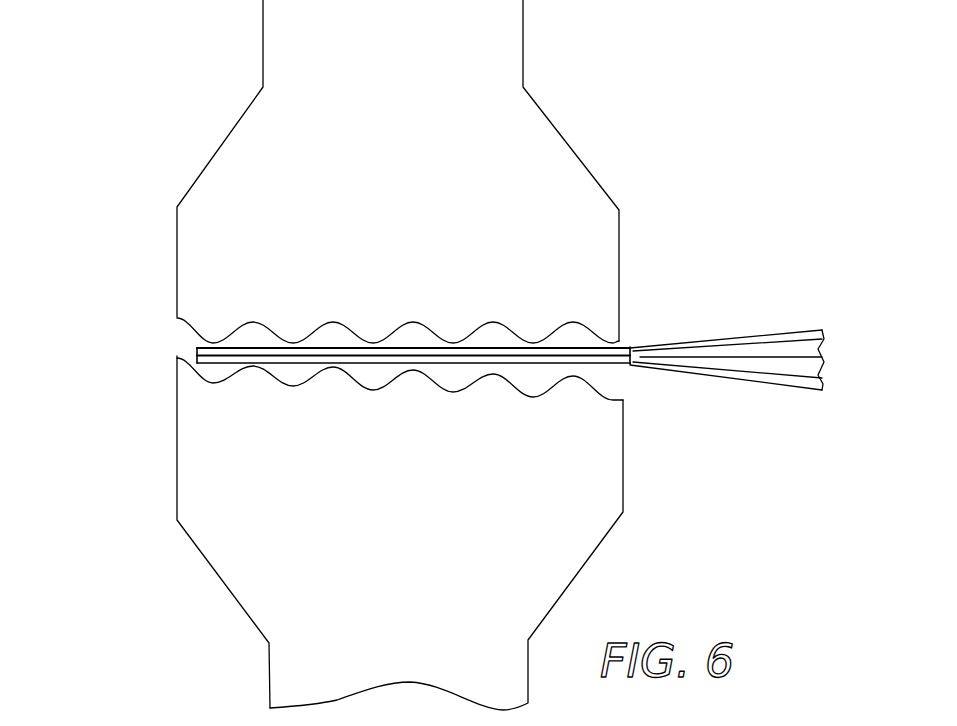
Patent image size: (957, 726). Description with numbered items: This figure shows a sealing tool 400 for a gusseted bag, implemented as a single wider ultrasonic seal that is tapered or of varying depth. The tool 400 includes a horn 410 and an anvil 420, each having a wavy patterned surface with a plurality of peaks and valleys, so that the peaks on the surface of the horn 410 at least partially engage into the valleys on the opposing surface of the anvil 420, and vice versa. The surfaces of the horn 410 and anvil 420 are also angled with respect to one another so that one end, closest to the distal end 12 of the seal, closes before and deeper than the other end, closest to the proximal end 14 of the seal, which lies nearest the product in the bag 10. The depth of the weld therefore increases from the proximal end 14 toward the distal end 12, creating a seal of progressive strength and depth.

The tool 400 is at (343, 355).
The horn 410 is at (190, 258).
The anvil 420 is at (187, 440).
The distal end 12 is at (192, 348).
The proximal end 14 is at (630, 336).
The bag 10 is at (782, 336).